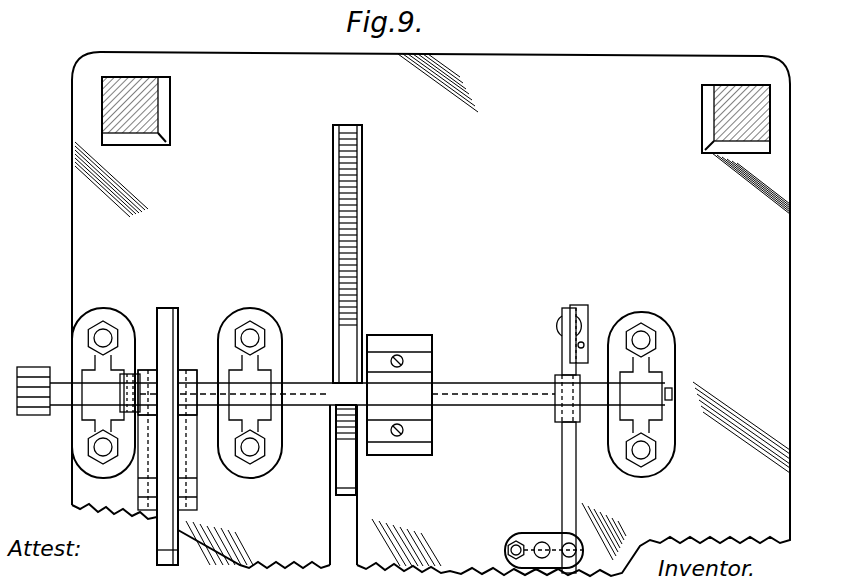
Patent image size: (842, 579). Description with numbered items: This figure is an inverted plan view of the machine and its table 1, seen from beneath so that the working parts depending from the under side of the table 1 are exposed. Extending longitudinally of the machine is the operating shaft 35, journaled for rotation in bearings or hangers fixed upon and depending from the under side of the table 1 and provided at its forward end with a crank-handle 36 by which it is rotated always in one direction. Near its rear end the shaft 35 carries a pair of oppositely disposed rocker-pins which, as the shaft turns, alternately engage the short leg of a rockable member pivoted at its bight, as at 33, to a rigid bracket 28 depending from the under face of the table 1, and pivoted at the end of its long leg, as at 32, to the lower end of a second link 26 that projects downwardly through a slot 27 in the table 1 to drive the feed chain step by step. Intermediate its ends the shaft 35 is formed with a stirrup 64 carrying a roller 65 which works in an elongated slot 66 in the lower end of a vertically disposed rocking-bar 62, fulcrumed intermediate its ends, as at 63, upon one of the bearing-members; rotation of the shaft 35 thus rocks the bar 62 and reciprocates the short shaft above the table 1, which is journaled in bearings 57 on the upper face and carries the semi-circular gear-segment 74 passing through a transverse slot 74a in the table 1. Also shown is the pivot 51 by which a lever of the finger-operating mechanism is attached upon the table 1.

The table 1 is at (431, 314).
The second link 26 is at (584, 345).
The slot 27 is at (588, 308).
The rigid bracket 28 is at (553, 540).
The pivot 32 is at (560, 322).
The pivot 33 is at (578, 548).
The operating shaft 35 is at (62, 398).
The crank-handle 36 is at (35, 415).
The pivot 51 is at (336, 540).
The bearings 57 is at (562, 356).
The rocking-bar 62 is at (170, 340).
The fulcrum 63 is at (208, 380).
The stirrup 64 is at (188, 440).
The roller 65 is at (180, 518).
The slot 66 is at (175, 549).
The gear-segment 74 is at (358, 207).
The slot 74a is at (345, 526).